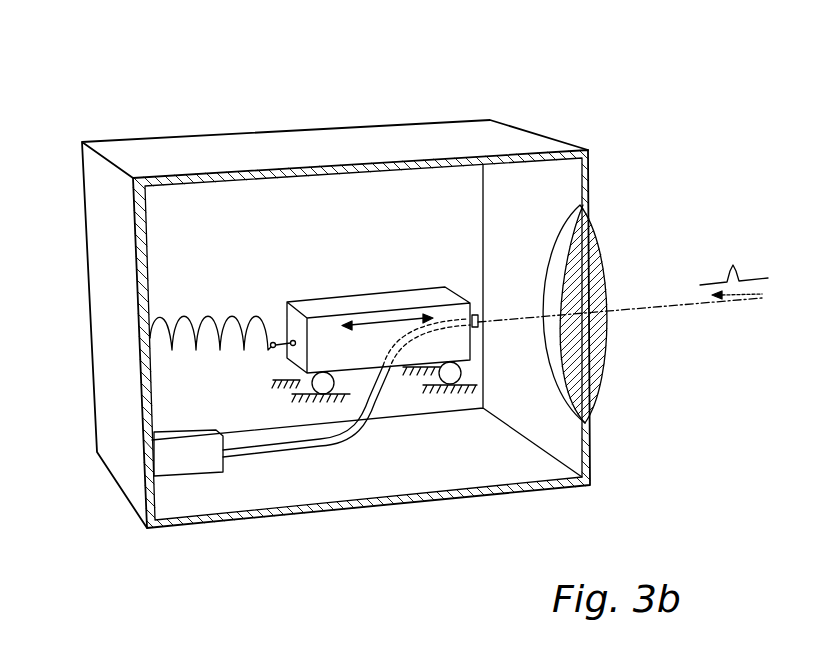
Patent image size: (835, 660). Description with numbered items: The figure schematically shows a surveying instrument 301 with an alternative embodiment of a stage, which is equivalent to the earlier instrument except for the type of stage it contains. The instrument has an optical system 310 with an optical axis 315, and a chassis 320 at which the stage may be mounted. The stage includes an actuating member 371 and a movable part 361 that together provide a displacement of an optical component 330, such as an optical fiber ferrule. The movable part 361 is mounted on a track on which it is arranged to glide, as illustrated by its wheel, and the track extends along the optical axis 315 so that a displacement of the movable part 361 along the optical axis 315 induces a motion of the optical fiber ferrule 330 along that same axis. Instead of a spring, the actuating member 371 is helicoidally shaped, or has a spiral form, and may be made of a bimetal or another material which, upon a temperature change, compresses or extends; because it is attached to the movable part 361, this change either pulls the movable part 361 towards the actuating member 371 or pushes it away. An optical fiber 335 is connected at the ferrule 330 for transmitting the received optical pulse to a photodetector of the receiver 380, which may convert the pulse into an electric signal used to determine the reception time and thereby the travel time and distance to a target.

The surveying instrument 301 is at (286, 99).
The optical system 310 is at (607, 255).
The optical axis 315 is at (675, 308).
The chassis 320 is at (117, 383).
The optical component 330 is at (478, 322).
The optical fiber 335 is at (315, 453).
The movable part 361 is at (348, 300).
The actuating member 371 is at (213, 320).
The receiver 380 is at (189, 462).